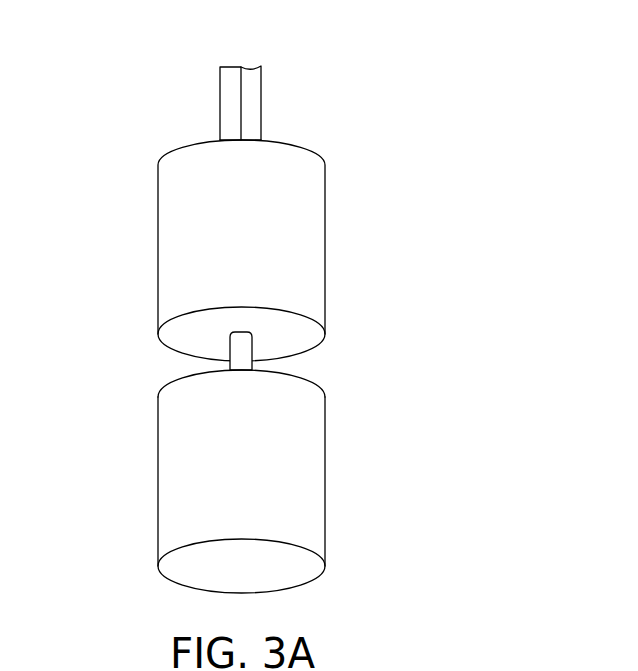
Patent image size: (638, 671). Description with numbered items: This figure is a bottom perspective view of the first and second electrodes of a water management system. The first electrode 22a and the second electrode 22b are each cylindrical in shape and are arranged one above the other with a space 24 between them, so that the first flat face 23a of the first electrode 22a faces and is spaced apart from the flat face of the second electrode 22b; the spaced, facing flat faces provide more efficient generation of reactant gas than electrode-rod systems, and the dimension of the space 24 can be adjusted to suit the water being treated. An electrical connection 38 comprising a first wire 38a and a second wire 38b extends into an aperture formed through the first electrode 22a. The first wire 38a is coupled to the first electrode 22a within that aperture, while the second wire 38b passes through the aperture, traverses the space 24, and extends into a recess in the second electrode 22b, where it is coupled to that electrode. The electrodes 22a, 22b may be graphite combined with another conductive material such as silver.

The first electrode 22a is at (314, 253).
The second electrode 22b is at (236, 476).
The first flat face 23a is at (292, 338).
The space 24 is at (170, 365).
The electrical connection 38 is at (210, 192).
The first wire 38a is at (232, 112).
The second wire 38b is at (198, 62).